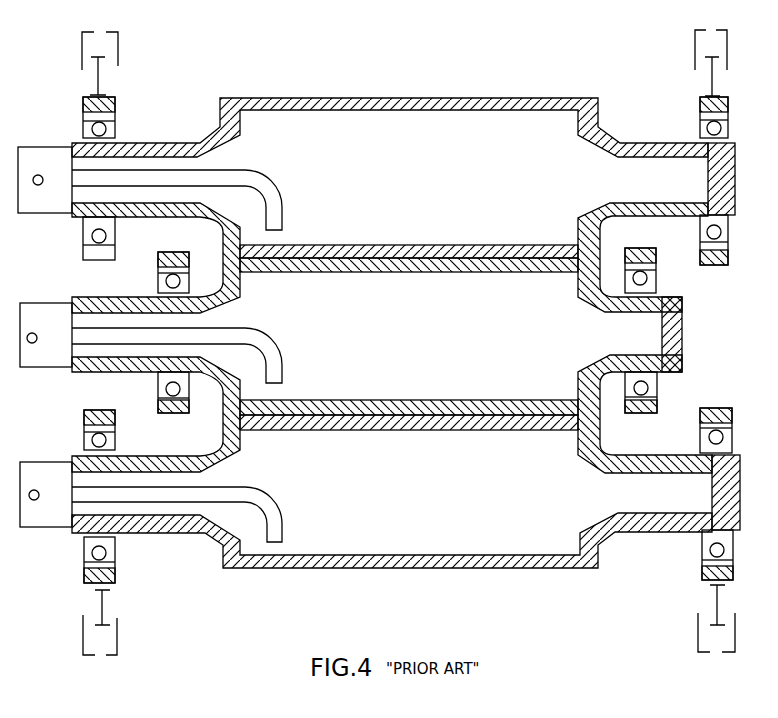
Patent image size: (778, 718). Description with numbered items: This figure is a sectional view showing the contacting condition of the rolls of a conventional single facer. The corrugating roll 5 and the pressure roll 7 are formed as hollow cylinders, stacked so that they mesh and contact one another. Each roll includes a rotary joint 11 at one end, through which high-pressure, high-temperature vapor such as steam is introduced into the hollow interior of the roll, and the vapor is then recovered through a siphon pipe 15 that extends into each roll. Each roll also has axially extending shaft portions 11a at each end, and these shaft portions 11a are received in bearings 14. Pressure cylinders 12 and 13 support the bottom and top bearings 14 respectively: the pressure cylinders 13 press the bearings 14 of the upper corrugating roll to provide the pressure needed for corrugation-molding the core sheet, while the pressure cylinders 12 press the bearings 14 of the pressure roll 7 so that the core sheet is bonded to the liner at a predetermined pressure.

The lower corrugating roll 5 is at (410, 273).
The pressure roll 7 is at (322, 96).
The rotary joint 11 is at (52, 197).
The shaft portion 11a is at (163, 153).
The pressure cylinder 12 is at (107, 640).
The pressure cylinder 13 is at (107, 47).
The bearing 14 is at (110, 128).
The siphon pipe 15 is at (271, 197).